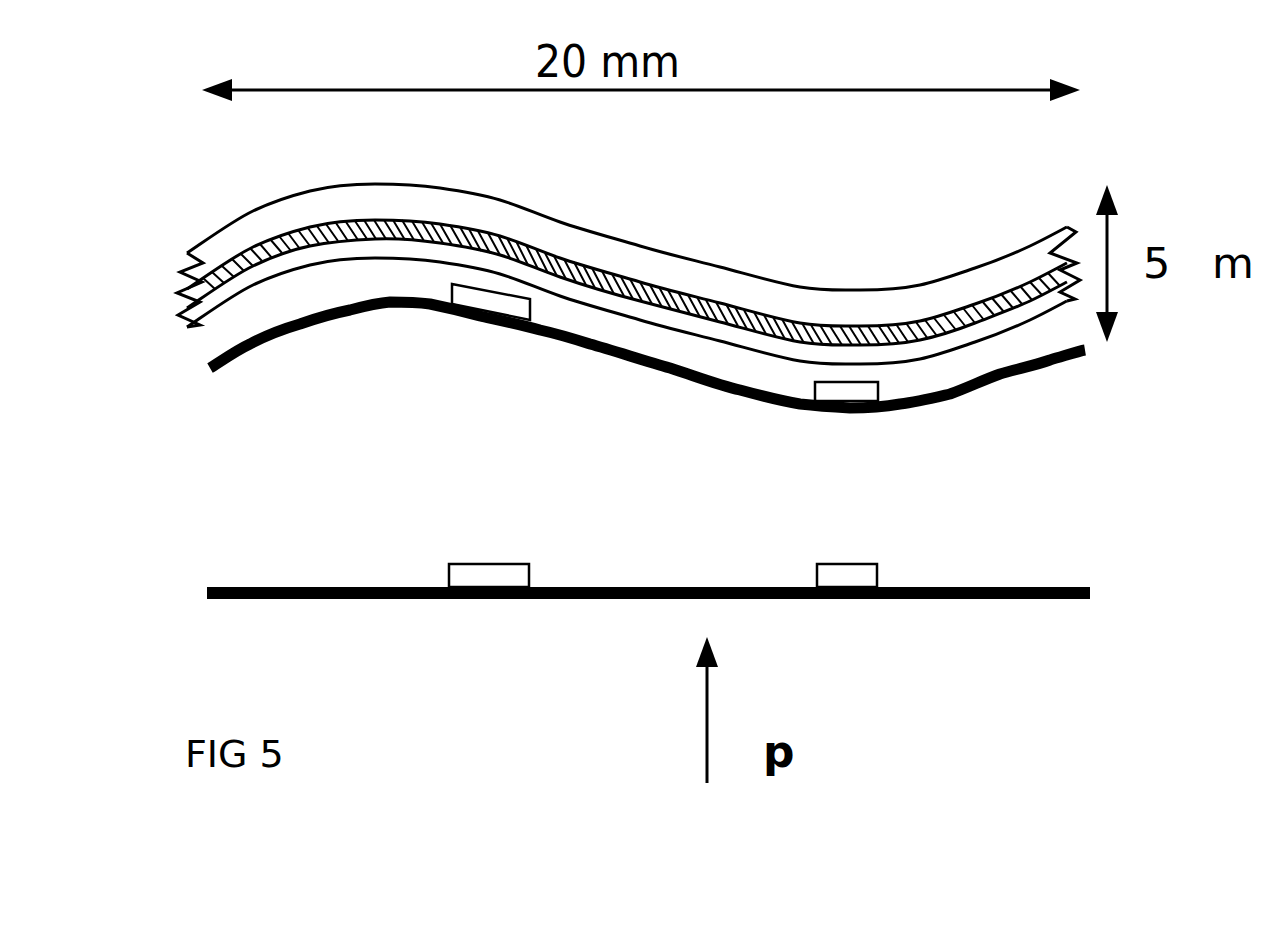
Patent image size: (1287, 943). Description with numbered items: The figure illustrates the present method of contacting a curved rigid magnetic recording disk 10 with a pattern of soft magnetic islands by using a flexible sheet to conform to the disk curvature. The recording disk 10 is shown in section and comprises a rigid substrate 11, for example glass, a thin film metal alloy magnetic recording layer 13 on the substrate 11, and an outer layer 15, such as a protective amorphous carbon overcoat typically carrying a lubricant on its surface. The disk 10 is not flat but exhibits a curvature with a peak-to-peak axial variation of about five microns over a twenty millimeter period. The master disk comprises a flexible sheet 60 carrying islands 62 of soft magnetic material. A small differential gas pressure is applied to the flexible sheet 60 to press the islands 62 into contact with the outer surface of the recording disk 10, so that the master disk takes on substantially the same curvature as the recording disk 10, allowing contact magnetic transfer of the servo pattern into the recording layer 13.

The magnetic recording disk 10 is at (628, 234).
The rigid substrate 11 is at (843, 287).
The magnetic recording layer 13 is at (734, 320).
The outer layer 15 is at (635, 316).
The flexible sheet 60 is at (1088, 350).
The islands 62 is at (450, 285).